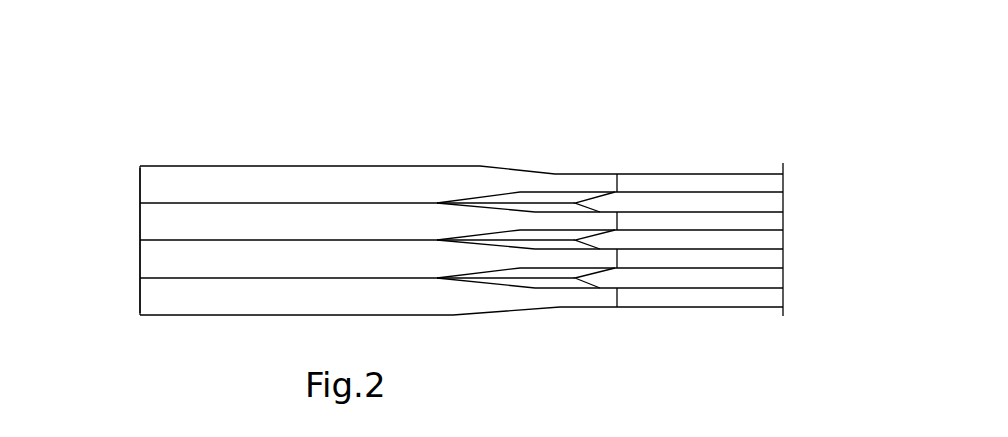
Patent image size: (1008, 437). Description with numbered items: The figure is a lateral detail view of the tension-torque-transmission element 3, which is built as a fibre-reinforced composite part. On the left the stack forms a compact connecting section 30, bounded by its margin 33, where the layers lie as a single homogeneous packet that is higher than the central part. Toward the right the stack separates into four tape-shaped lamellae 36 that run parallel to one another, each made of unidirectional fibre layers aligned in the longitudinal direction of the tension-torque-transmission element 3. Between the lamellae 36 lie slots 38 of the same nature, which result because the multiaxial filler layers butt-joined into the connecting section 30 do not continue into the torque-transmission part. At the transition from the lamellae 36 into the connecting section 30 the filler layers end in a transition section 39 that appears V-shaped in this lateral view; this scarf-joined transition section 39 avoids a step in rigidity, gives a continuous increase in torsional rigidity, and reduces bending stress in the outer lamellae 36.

The tension-torque-transmission element 3 is at (430, 108).
The connecting section 30 is at (176, 156).
The margin 33 is at (140, 183).
The lamella 36 is at (682, 223).
The slot 38 is at (786, 203).
The transition section 39 is at (522, 285).